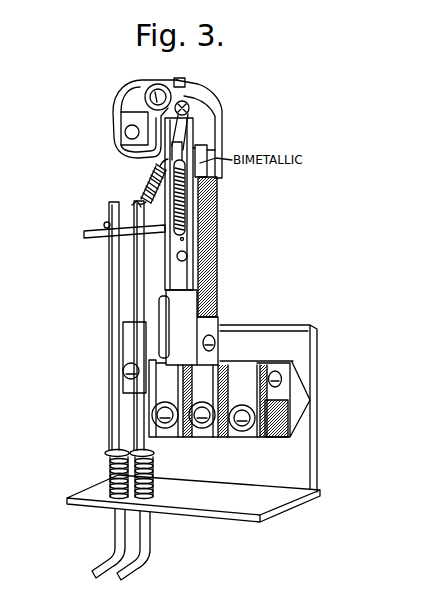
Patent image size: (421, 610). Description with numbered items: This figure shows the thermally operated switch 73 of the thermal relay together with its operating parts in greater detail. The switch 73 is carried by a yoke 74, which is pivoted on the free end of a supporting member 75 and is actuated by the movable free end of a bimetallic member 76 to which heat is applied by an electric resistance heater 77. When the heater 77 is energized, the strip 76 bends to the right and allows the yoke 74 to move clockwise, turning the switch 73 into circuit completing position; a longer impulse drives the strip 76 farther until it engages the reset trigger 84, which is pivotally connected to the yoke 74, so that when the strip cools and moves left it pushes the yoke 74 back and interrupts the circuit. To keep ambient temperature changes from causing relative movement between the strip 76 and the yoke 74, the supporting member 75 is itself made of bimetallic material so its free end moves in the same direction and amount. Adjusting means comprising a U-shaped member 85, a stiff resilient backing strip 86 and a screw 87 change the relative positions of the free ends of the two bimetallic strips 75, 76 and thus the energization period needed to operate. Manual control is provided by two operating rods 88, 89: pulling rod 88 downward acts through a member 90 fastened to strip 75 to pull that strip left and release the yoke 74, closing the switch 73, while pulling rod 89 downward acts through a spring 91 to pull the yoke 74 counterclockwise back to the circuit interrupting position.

The switch 73 is at (130, 148).
The yoke 74 is at (183, 88).
The supporting member 75 is at (178, 243).
The bimetallic member 76 is at (214, 179).
The electric resistance heater 77 is at (218, 258).
The reset trigger 84 is at (205, 127).
The U-shaped member 85 is at (162, 318).
The stiff resilient backing strip 86 is at (184, 304).
The screw 87 is at (214, 343).
The operating rod 88 is at (118, 392).
The operating rod 89 is at (146, 417).
The member 90 is at (106, 236).
The spring 91 is at (142, 187).